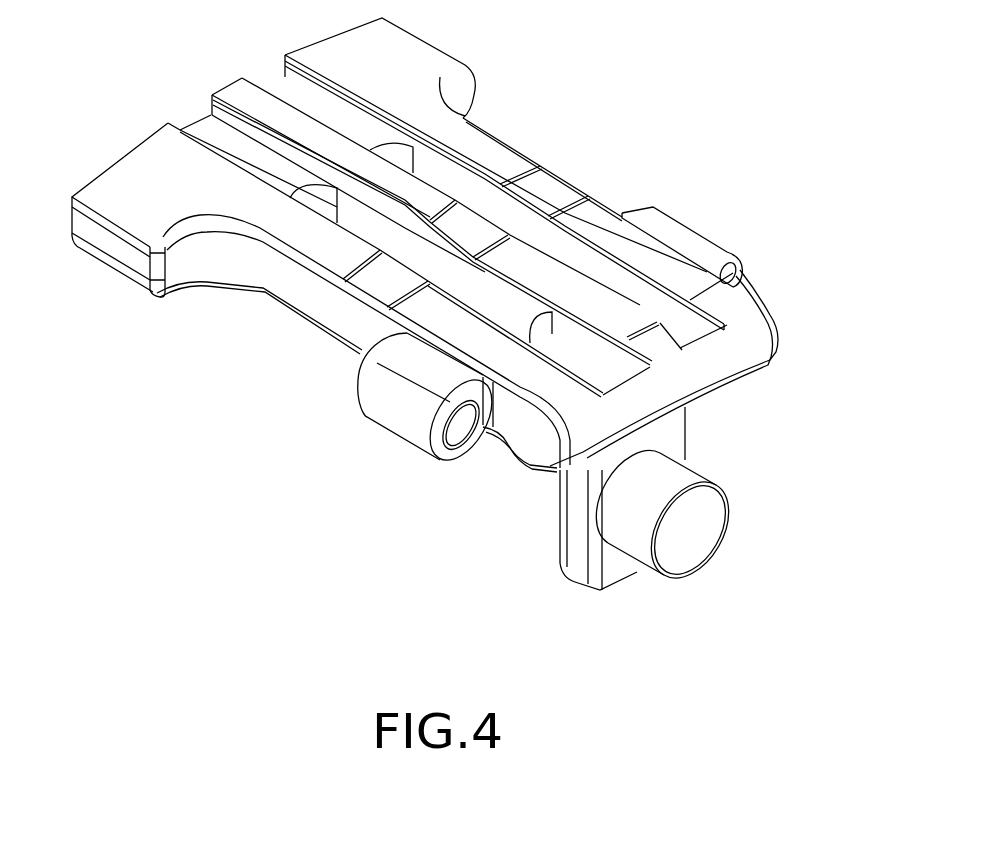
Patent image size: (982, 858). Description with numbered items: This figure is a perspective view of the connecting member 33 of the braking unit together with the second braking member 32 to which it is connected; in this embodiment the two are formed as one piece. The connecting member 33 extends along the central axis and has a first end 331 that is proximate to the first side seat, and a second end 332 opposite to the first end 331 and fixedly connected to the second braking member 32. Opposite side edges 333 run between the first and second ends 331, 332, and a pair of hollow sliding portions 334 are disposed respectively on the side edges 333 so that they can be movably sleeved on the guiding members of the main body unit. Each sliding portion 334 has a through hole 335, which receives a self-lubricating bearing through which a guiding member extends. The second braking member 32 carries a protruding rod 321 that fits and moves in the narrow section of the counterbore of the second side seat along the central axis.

The second braking member 32 is at (676, 432).
The protruding rod 321 is at (712, 518).
The connecting member 33 is at (515, 160).
The first end 331 is at (97, 193).
The second end 332 is at (752, 325).
The side edges 333 is at (582, 192).
The sliding portions 334 is at (695, 238).
The through hole 335 is at (727, 270).